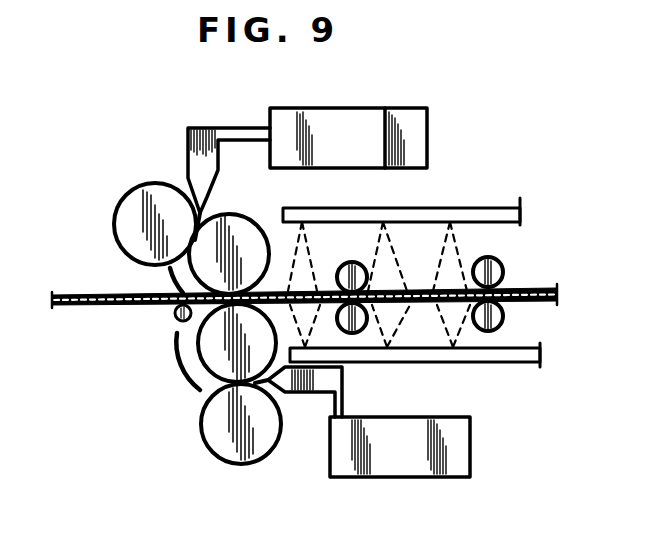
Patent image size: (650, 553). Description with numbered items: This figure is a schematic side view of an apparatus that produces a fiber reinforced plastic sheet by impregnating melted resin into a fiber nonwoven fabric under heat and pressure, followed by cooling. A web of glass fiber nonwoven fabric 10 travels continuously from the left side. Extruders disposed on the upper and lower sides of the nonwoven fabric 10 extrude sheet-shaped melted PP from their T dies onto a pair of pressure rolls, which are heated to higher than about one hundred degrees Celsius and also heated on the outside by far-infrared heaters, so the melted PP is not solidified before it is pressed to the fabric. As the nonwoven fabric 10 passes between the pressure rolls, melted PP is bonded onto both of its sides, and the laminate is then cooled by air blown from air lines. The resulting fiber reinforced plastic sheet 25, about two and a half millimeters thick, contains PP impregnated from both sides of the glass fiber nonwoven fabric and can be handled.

The nonwoven fabric 10 is at (67, 293).
The fiber reinforced plastic sheet 25 is at (525, 287).